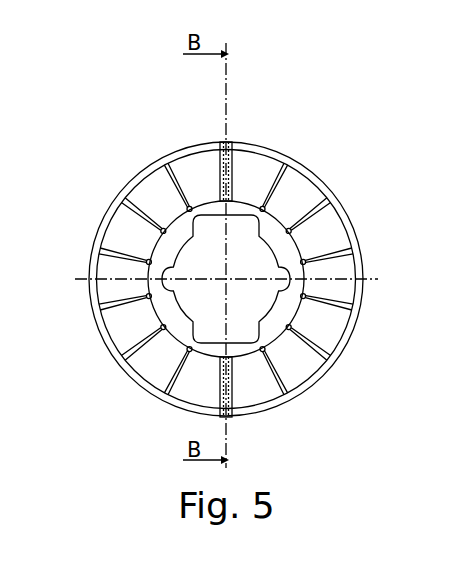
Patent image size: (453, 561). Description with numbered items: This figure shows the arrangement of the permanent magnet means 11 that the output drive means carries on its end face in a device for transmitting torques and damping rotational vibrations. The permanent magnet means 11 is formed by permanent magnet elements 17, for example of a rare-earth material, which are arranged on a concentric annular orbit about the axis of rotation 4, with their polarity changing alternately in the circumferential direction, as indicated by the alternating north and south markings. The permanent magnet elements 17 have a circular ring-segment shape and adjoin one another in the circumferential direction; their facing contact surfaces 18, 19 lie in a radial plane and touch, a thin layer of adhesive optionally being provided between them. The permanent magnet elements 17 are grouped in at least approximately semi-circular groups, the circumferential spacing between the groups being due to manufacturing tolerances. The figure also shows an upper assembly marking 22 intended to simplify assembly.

The axis of rotation 4 is at (226, 279).
The permanent magnet means 11 is at (328, 266).
The permanent magnet elements 17 is at (245, 162).
The contact surface 18 is at (264, 206).
The contact surface 19 is at (282, 168).
The slot between magnet poles 22 is at (222, 147).